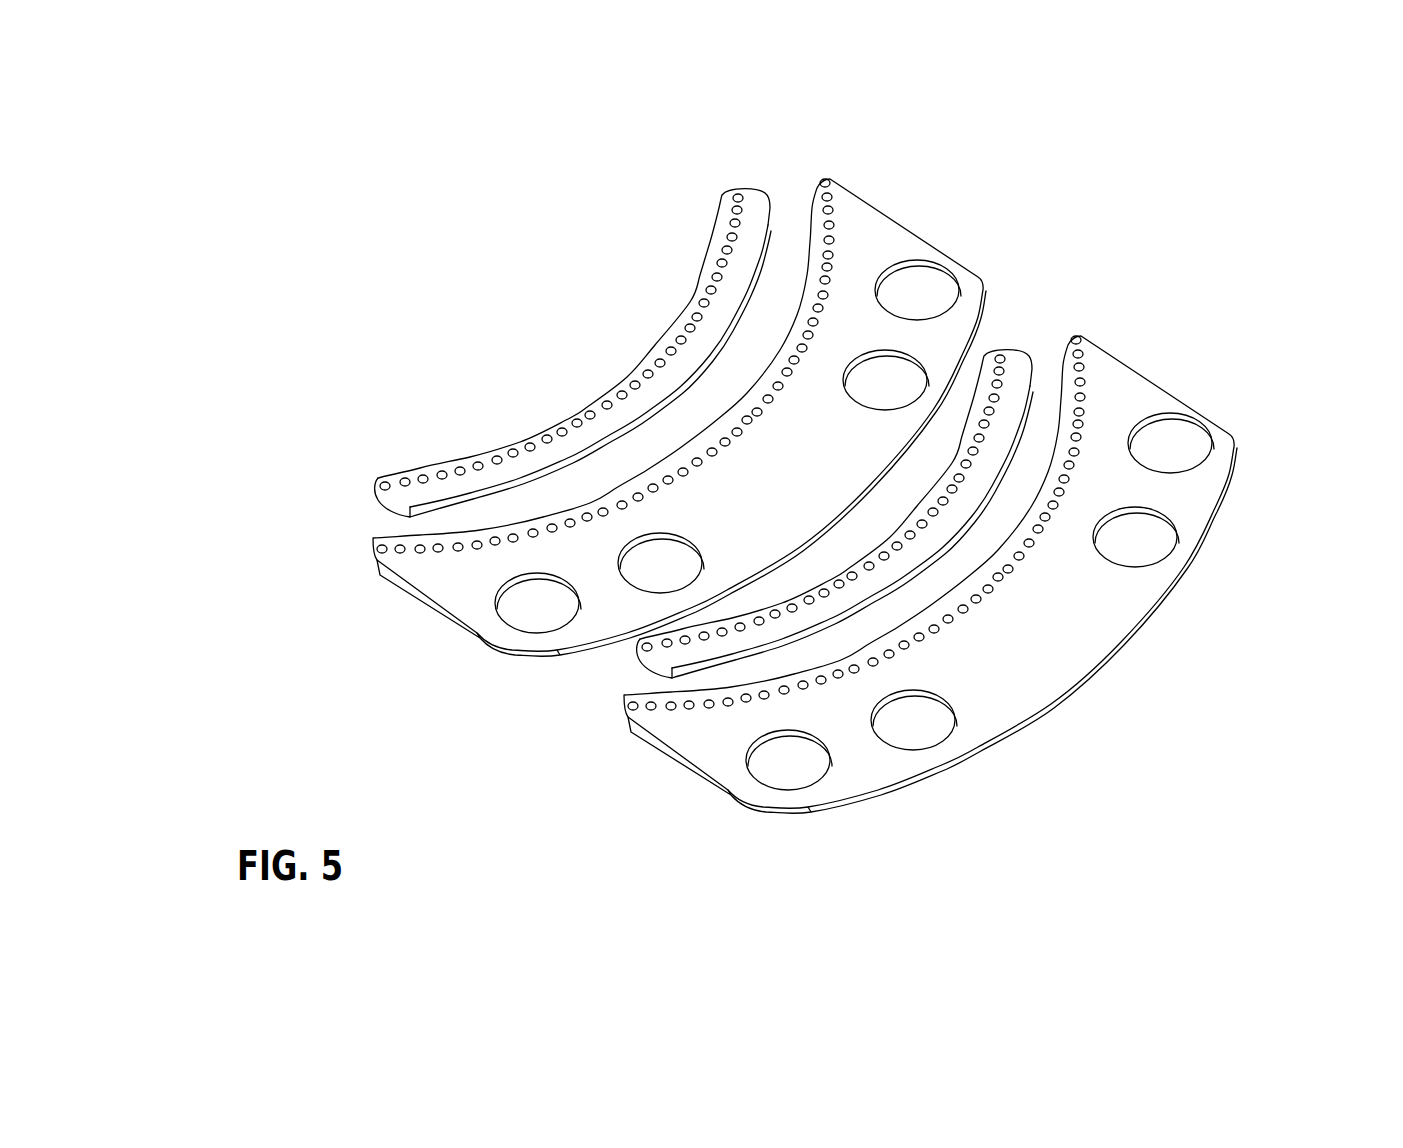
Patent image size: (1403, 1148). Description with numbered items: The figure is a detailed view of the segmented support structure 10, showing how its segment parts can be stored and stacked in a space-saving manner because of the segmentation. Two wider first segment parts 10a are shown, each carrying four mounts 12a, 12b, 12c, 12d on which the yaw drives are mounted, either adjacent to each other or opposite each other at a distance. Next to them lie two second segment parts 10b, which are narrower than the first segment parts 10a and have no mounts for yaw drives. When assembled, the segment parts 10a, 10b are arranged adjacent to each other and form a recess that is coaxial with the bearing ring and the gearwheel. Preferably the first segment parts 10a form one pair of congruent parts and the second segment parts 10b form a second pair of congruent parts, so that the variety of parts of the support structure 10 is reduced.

The support structure 10 is at (727, 870).
The first segment part 10a is at (902, 227).
The second segment part 10b is at (755, 203).
The mount 12a is at (537, 617).
The mount 12b is at (663, 563).
The mount 12c is at (867, 393).
The mount 12d is at (932, 288).